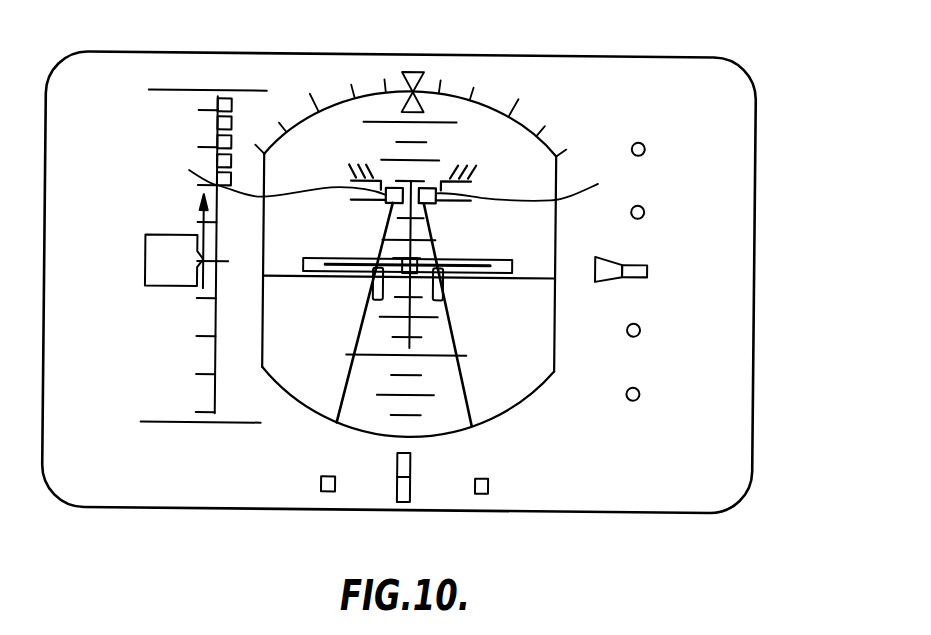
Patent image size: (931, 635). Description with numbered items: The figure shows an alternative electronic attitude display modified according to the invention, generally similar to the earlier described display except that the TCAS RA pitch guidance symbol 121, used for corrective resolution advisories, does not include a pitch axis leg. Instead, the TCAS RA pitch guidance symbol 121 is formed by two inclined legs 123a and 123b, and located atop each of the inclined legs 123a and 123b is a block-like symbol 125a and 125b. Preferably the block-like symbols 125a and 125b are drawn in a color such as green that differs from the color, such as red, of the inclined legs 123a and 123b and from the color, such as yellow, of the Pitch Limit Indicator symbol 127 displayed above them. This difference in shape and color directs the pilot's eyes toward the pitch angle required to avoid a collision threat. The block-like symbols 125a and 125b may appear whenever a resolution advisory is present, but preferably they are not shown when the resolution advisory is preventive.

The TCAS RA pitch guidance symbol 121 is at (444, 240).
The inclined leg 123a is at (348, 388).
The inclined leg 123b is at (465, 388).
The block-like symbol 125a is at (256, 177).
The block-like symbol 125b is at (547, 185).
The Pitch Limit Indicator (PLI) symbol 127 is at (457, 164).